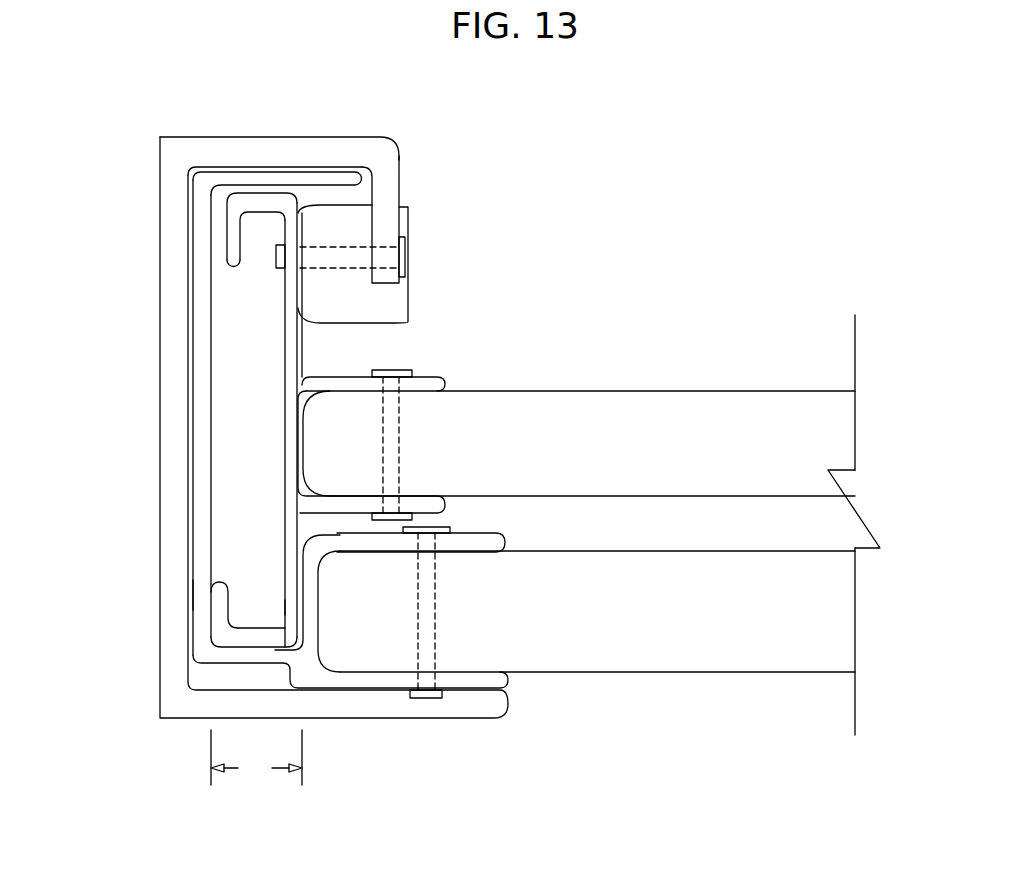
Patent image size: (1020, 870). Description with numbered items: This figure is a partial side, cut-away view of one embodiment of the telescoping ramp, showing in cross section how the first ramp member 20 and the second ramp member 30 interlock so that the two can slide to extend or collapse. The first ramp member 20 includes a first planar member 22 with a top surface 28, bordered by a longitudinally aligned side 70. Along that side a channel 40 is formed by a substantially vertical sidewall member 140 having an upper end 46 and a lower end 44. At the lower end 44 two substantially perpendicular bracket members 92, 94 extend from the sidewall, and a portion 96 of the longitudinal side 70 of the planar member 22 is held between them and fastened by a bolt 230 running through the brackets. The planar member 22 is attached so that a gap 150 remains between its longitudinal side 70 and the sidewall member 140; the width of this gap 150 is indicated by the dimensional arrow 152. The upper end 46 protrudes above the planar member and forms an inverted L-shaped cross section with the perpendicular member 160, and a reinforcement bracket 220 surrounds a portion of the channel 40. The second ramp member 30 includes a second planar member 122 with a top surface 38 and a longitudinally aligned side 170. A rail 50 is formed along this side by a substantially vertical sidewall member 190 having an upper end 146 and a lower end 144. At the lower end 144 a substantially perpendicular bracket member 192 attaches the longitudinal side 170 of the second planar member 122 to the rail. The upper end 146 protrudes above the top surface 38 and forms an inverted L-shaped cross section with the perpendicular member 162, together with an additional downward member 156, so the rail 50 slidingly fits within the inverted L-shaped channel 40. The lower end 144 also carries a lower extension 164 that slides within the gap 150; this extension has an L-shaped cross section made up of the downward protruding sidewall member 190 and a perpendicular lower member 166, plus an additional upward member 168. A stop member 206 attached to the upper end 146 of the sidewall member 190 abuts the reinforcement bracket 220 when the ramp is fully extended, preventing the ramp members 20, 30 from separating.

The first ramp member 20 is at (703, 672).
The first planar member 22 is at (625, 585).
The top surface 28 is at (800, 548).
The second ramp member 30 is at (730, 391).
The top surface 38 is at (797, 391).
The channel 40 is at (189, 276).
The lower end 44 is at (205, 595).
The upper end 46 is at (202, 205).
The rail 50 is at (282, 385).
The longitudinally aligned side 70 is at (330, 563).
The bracket member 92 is at (352, 680).
The bracket member 94 is at (487, 541).
The portion 96 is at (370, 618).
The second planar member 122 is at (653, 415).
The sidewall member 140 is at (202, 302).
The lower end 144 is at (290, 533).
The upper end 146 is at (290, 297).
The gap 150 is at (252, 638).
The dimensional arrow 152 is at (256, 757).
The downward member 156 is at (235, 242).
The perpendicular member 160 is at (318, 175).
The perpendicular member 162 is at (252, 202).
The lower extension 164 is at (290, 607).
The lower member 166 is at (222, 650).
The upward member 168 is at (253, 602).
The longitudinally aligned side 170 is at (306, 405).
The sidewall member 190 is at (290, 450).
The bracket member 192 is at (430, 497).
The stop member 206 is at (408, 212).
The reinforcement bracket 220 is at (278, 137).
The bolt 230 is at (425, 698).